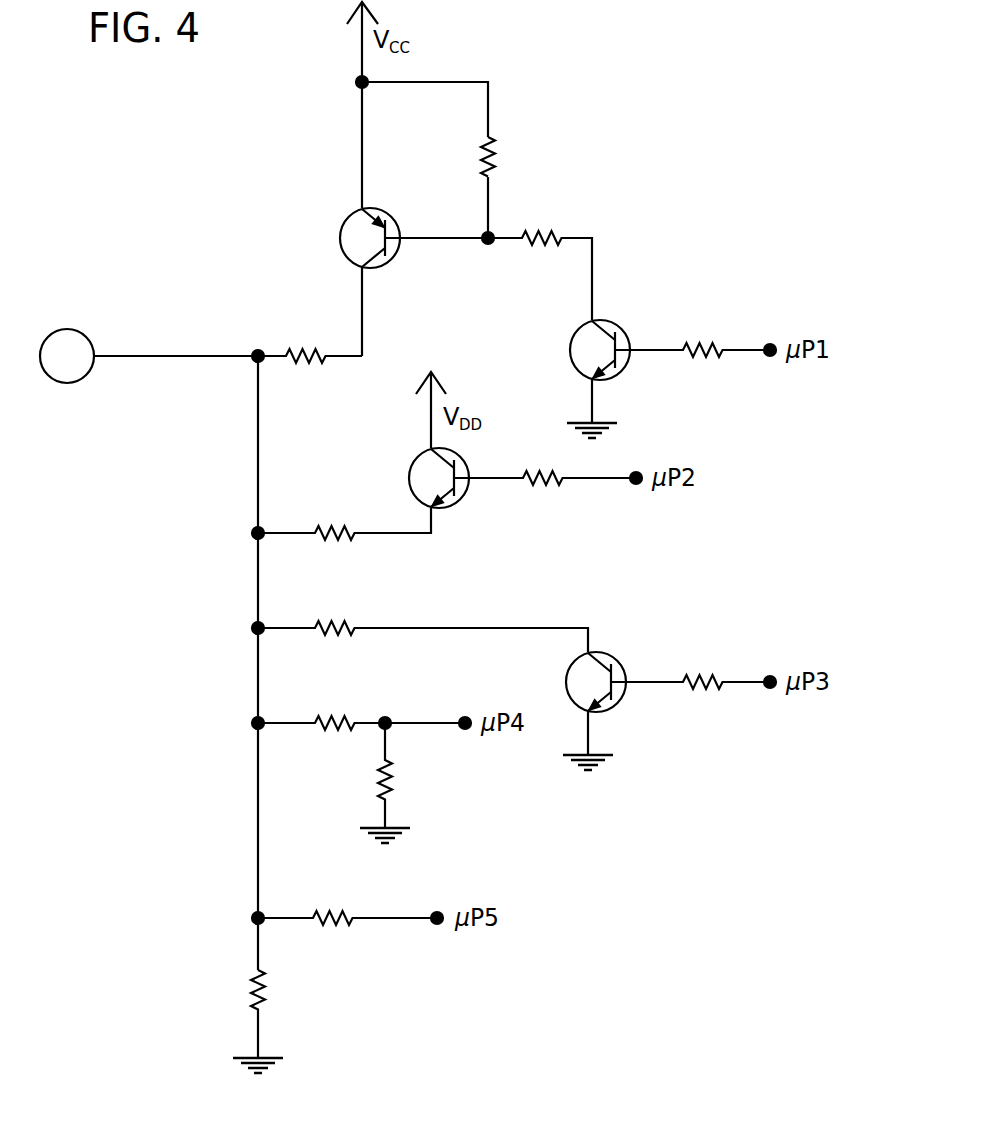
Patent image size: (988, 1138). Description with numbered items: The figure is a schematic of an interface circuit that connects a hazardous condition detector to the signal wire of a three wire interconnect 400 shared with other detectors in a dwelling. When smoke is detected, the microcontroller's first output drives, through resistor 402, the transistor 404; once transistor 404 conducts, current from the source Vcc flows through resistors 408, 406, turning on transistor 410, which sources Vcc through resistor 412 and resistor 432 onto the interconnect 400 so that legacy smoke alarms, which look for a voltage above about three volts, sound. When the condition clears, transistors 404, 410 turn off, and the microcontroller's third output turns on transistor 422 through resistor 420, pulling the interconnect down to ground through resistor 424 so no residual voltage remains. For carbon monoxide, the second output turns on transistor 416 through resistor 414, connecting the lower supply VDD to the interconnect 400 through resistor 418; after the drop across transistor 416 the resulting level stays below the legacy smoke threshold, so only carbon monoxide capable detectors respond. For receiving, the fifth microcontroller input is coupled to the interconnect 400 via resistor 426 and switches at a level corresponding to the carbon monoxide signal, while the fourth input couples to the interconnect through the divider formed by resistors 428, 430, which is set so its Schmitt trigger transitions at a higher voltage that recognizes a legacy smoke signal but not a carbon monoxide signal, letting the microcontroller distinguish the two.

The interconnect 400 is at (68, 384).
The resistor 402 is at (703, 347).
The transistor 404 is at (579, 330).
The resistor 406 is at (538, 232).
The resistor 408 is at (498, 165).
The transistor 410 is at (342, 248).
The resistor 412 is at (304, 348).
The resistor 414 is at (538, 490).
The transistor 416 is at (410, 470).
The resistor 418 is at (338, 545).
The resistor 420 is at (701, 672).
The transistor 422 is at (606, 712).
The resistor 424 is at (343, 622).
The resistor 426 is at (336, 910).
The resistor 428 is at (339, 718).
The resistor 430 is at (393, 782).
The resistor 432 is at (266, 992).